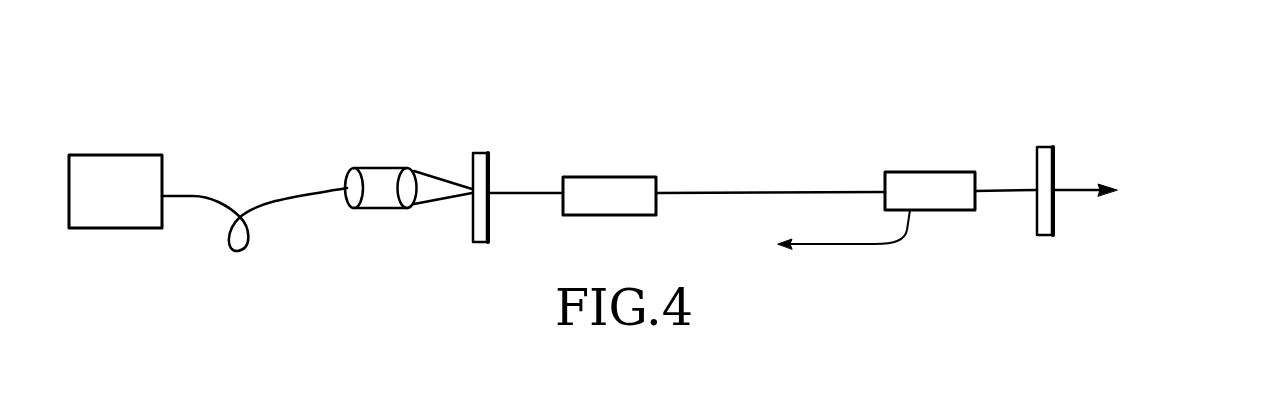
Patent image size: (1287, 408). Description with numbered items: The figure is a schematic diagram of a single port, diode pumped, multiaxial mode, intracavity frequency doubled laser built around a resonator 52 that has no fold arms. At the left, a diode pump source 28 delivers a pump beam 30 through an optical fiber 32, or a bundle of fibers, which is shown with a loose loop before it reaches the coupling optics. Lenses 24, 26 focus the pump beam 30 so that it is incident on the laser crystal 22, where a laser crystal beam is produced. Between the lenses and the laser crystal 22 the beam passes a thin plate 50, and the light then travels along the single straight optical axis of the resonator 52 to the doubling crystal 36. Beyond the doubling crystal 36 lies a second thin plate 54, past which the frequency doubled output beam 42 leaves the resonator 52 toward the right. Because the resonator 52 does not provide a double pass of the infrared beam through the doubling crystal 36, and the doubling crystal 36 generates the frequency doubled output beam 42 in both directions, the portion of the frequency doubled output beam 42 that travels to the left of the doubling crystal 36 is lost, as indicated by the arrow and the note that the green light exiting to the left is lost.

The diode pump source 28 is at (115, 160).
The optical fiber 32 is at (192, 195).
The lens 24 is at (350, 206).
The lens 26 is at (410, 207).
The pump beam 30 is at (432, 183).
The input mirror 50 is at (483, 168).
The laser crystal 22 is at (610, 183).
The resonator 52 is at (755, 92).
The doubling crystal 36 is at (908, 182).
The output mirror 54 is at (1047, 160).
The frequency doubled output beam 42 is at (1106, 186).